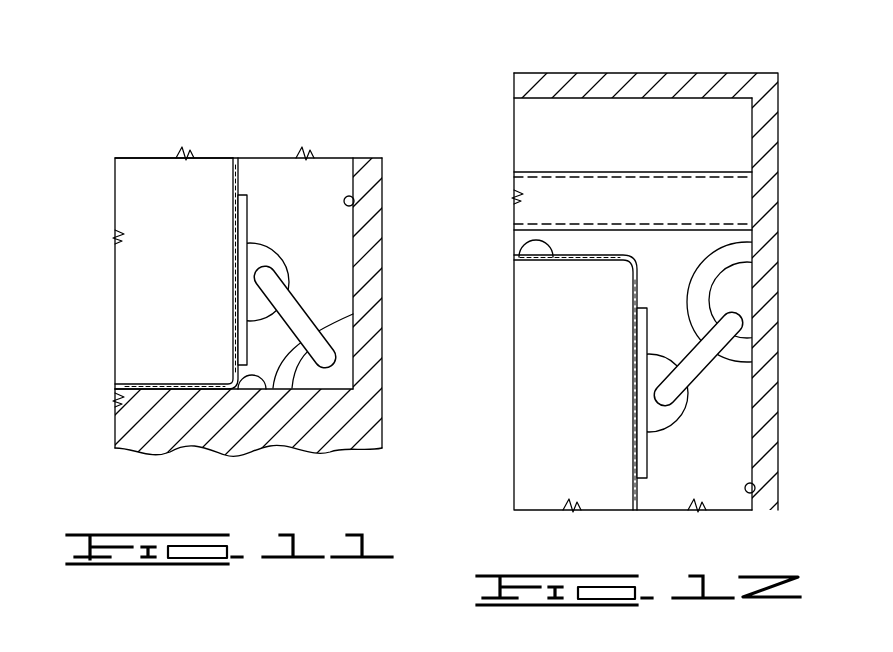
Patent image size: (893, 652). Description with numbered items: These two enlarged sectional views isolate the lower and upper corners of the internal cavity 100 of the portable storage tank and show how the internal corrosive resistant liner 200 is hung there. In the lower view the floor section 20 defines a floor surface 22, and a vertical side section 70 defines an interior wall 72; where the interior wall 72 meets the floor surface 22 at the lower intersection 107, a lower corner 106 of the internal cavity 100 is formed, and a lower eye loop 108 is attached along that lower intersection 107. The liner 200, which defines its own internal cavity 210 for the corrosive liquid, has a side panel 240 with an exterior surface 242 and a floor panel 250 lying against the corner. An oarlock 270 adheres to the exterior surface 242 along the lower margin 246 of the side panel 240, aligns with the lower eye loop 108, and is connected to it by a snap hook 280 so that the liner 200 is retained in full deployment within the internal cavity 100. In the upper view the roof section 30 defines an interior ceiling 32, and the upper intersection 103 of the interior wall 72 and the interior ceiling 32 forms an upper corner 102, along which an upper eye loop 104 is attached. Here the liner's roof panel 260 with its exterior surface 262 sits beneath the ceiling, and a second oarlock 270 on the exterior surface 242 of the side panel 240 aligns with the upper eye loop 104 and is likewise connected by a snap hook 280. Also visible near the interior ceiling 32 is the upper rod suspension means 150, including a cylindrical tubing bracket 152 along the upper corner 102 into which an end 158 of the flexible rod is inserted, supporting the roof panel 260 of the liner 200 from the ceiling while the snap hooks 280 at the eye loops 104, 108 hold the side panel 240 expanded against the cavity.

In FIG. 11, the floor section 20 is at (163, 437).
In FIG. 11, the floor surface 22 is at (245, 395).
In FIG. 12, the roof section 30 is at (752, 73).
In FIG. 12, the interior ceiling 32 is at (535, 108).
In FIG. 11, the vertical side section 70 is at (381, 238).
In FIG. 12, the vertical side section 70 is at (780, 335).
In FIG. 11, the interior wall 72 is at (354, 199).
In FIG. 12, the interior wall 72 is at (755, 486).
In FIG. 11, the internal cavity 100 is at (317, 177).
In FIG. 12, the internal cavity 100 is at (711, 477).
In FIG. 12, the upper corner 102 is at (736, 128).
In FIG. 12, the upper intersection 103 is at (780, 75).
In FIG. 12, the upper eye loop 104 is at (737, 263).
In FIG. 11, the lower corner 106 is at (320, 378).
In FIG. 11, the lower intersection 107 is at (355, 390).
In FIG. 11, the lower eye loop 108 is at (317, 326).
In FIG. 12, the lower eye loop 108 is at (649, 393).
In FIG. 12, the upper rod suspension means 150 is at (523, 185).
In FIG. 12, the cylindrical tubing bracket 152 is at (728, 172).
In FIG. 12, the rod end 158 is at (723, 213).
In FIG. 11, the internal corrosive resistant liner 200 is at (233, 170).
In FIG. 12, the internal corrosive resistant liner 200 is at (633, 445).
In FIG. 11, the internal cavity of liner 210 is at (138, 205).
In FIG. 12, the side panel 240 is at (637, 495).
In FIG. 11, the exterior surface of side panel 242 is at (242, 228).
In FIG. 12, the exterior surface of side panel 242 is at (637, 293).
In FIG. 11, the lower margin 246 is at (205, 370).
In FIG. 11, the floor panel 250 is at (130, 383).
In FIG. 12, the roof panel 260 is at (603, 255).
In FIG. 12, the exterior surface of roof panel 262 is at (522, 243).
In FIG. 11, the oarlock 270 is at (238, 230).
In FIG. 12, the oarlock 270 is at (683, 420).
In FIG. 11, the snap hook 280 is at (300, 310).
In FIG. 12, the snap hook 280 is at (688, 372).